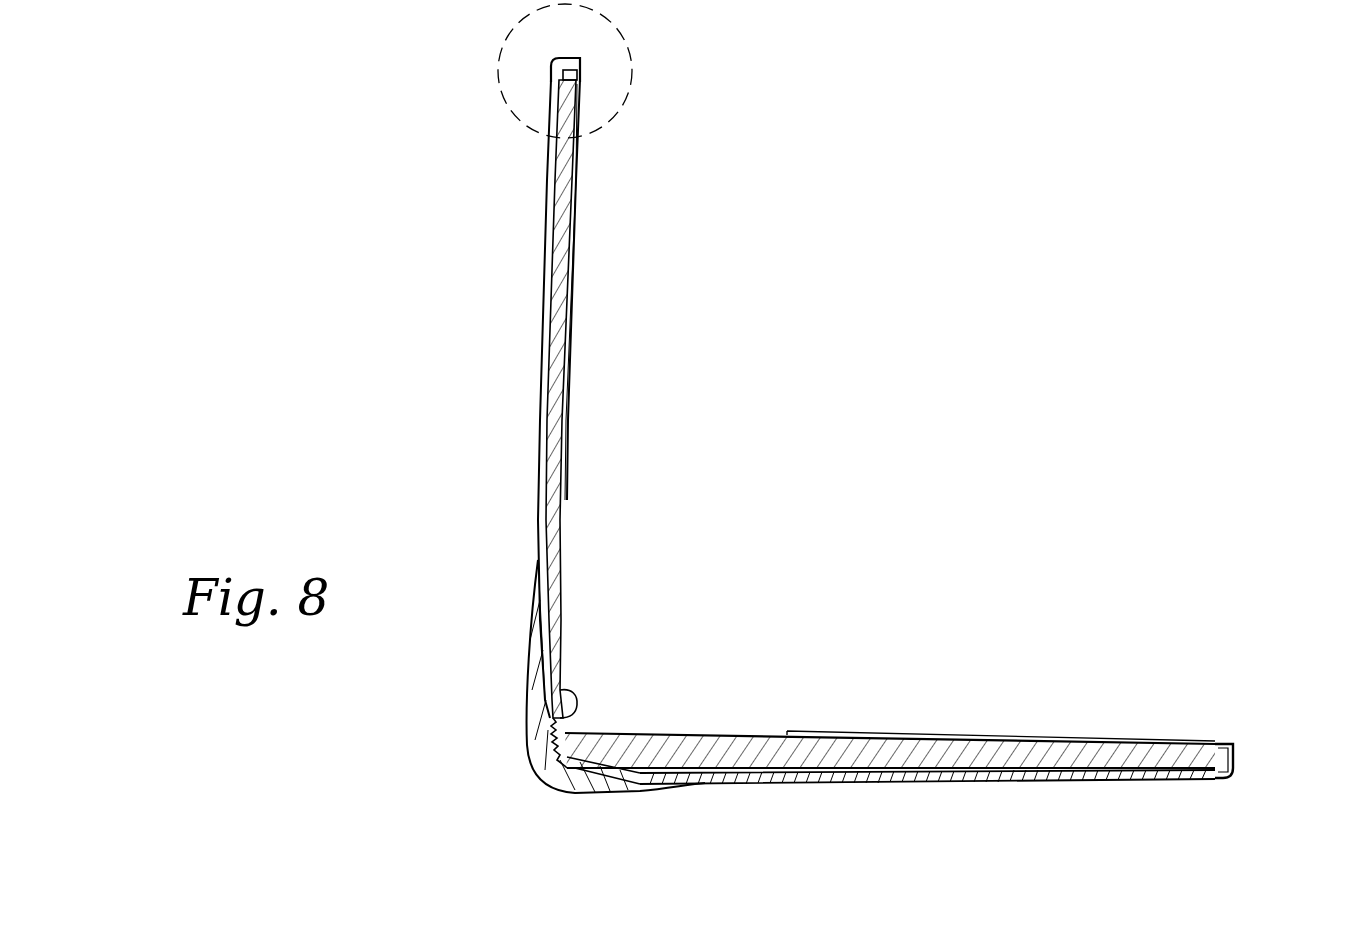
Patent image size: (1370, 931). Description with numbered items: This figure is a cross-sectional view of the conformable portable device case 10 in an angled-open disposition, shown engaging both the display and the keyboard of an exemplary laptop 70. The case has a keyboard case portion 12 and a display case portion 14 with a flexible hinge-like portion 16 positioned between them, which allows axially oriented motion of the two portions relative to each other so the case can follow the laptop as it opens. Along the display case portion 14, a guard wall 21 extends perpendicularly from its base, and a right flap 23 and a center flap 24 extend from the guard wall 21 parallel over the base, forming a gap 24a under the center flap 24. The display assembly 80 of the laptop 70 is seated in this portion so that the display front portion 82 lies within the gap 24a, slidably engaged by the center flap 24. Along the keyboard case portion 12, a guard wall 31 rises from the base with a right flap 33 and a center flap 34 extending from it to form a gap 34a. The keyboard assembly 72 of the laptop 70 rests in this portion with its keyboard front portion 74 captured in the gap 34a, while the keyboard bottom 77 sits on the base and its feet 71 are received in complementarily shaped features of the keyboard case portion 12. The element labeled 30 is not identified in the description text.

The portable device case 10 is at (413, 247).
The keyboard case portion 12 is at (630, 35).
The display case portion 14 is at (502, 362).
The flexible hinge-like portion 16 is at (522, 773).
The guard wall 21 is at (573, 58).
The right flap 23 is at (570, 393).
The center flap 24 is at (583, 72).
The gap 24a is at (575, 75).
The tab 30 is at (618, 793).
The guard wall 31 is at (1235, 758).
The right flap 33 is at (874, 735).
The center flap 34 is at (1212, 750).
The gap 34a is at (1200, 768).
The exemplary laptop 70 is at (653, 637).
The feet 71 is at (657, 775).
The keyboard assembly 72 is at (698, 745).
The keyboard front portion 74 is at (1186, 756).
The keyboard bottom 77 is at (813, 783).
The display assembly 80 is at (566, 300).
The display front portion 82 is at (583, 92).